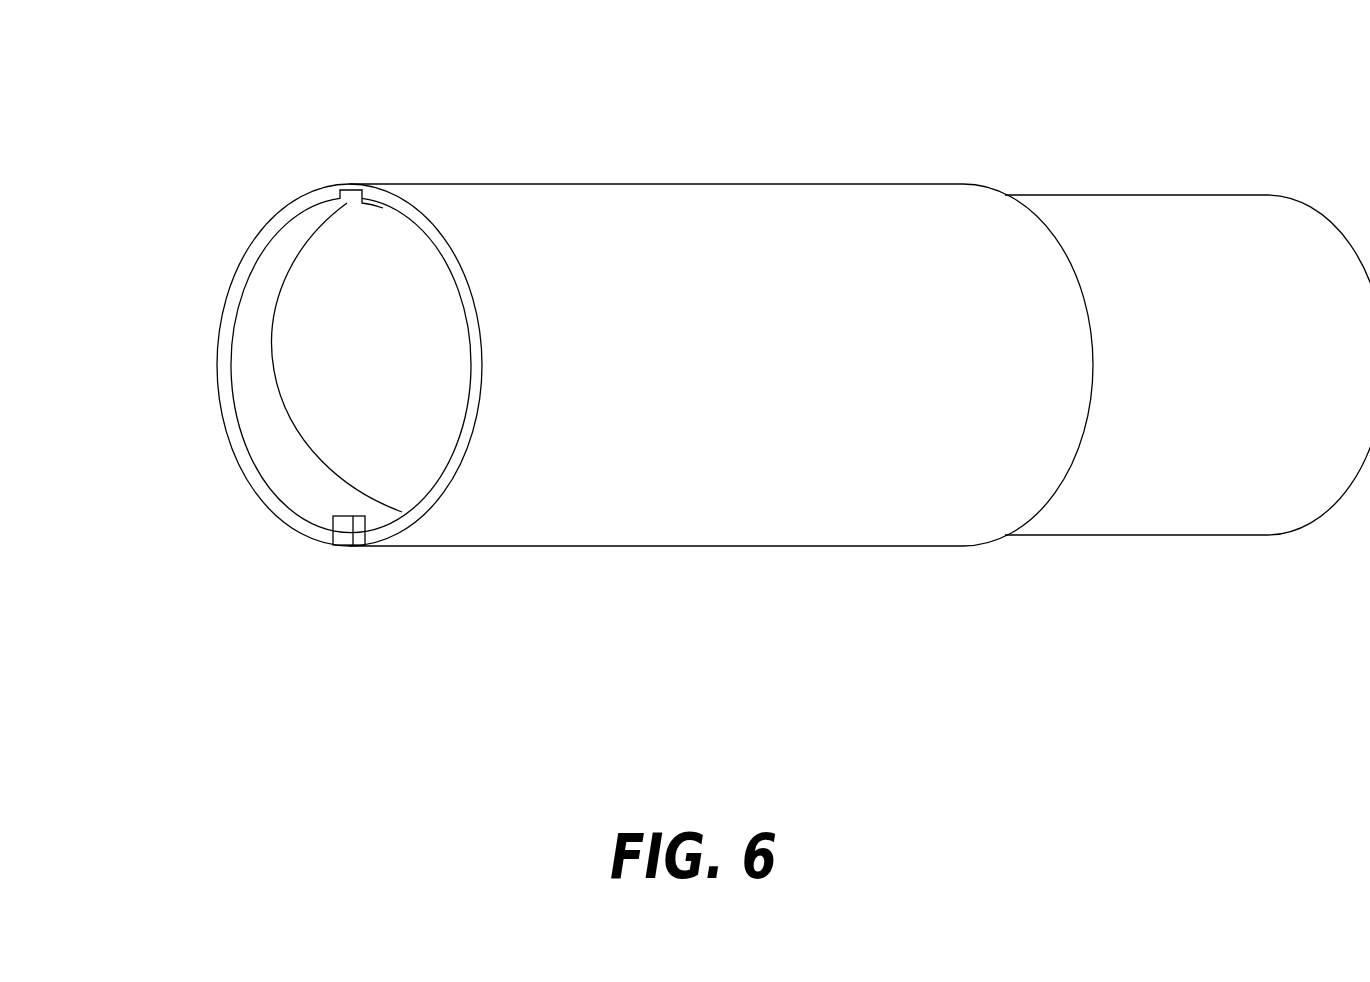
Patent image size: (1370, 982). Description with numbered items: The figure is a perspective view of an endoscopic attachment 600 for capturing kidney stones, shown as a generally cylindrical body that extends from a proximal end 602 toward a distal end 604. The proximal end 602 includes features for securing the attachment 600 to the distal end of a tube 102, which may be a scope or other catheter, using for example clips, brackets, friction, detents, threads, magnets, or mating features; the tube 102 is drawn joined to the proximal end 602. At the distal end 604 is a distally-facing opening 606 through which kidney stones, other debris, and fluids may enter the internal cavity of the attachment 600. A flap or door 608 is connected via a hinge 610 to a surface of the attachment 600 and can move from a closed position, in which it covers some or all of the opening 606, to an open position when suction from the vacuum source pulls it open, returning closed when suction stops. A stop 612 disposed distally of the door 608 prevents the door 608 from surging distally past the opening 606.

The tube 102 is at (1137, 195).
The attachment 600 is at (787, 546).
The proximal end 602 is at (927, 143).
The distal end 604 is at (292, 152).
The distally-facing opening 606 is at (210, 525).
The door 608 is at (273, 352).
The hinge 610 is at (347, 190).
The stop 612 is at (347, 535).